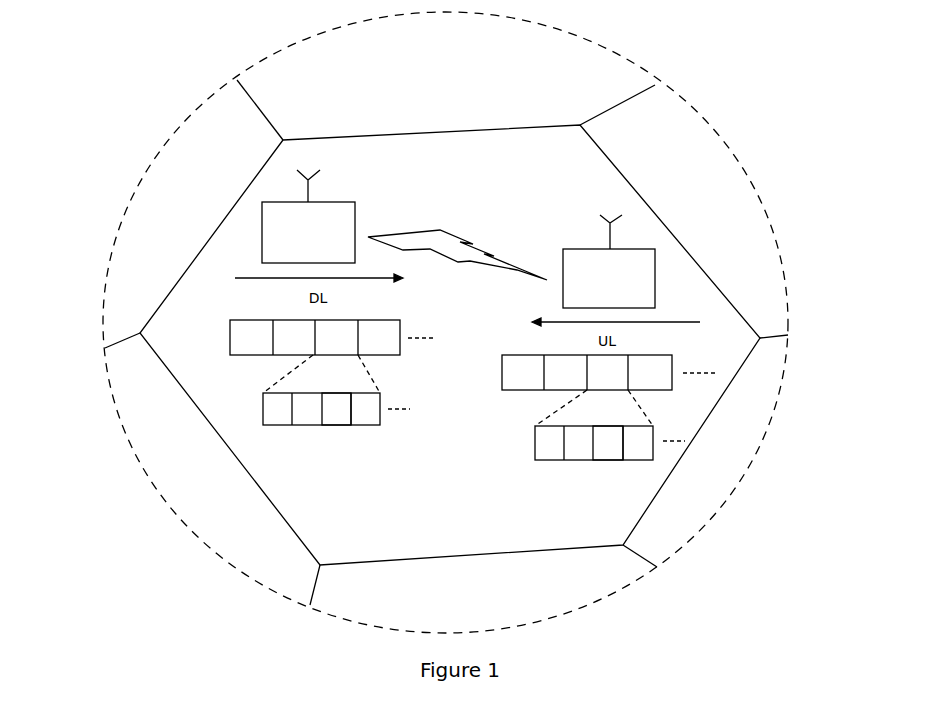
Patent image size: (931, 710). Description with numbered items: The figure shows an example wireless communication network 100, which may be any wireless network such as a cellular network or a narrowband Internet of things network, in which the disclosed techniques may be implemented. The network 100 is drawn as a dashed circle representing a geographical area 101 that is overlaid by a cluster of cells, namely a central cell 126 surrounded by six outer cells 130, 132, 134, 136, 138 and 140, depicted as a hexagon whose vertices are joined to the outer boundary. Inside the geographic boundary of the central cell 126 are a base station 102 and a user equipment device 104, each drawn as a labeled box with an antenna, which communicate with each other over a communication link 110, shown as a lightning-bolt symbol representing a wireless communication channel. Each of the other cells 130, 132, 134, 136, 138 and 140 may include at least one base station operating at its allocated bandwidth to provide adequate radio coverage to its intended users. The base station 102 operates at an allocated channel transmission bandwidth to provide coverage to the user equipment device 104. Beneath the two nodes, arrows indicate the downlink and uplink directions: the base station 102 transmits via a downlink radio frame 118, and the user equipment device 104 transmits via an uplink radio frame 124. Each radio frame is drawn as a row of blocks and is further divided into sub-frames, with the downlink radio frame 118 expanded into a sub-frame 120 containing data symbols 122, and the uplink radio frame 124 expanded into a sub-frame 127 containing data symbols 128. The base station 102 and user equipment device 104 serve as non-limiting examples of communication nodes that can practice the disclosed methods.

The wireless communication network 100 is at (805, 113).
The geographical area 101 is at (120, 214).
The base station 102 is at (294, 254).
The user equipment device 104 is at (594, 301).
The communication link 110 is at (448, 237).
The downlink radio frame 118 is at (237, 338).
The sub-frame 120 is at (263, 415).
The data symbol 122 is at (338, 424).
The uplink radio frame 124 is at (508, 373).
The cell 126 is at (451, 532).
The sub-frame 127 is at (535, 452).
The data symbol 128 is at (610, 462).
The cell 130 is at (163, 218).
The cell 132 is at (434, 90).
The cell 134 is at (689, 212).
The cell 136 is at (701, 478).
The cell 138 is at (466, 602).
The cell 140 is at (179, 487).